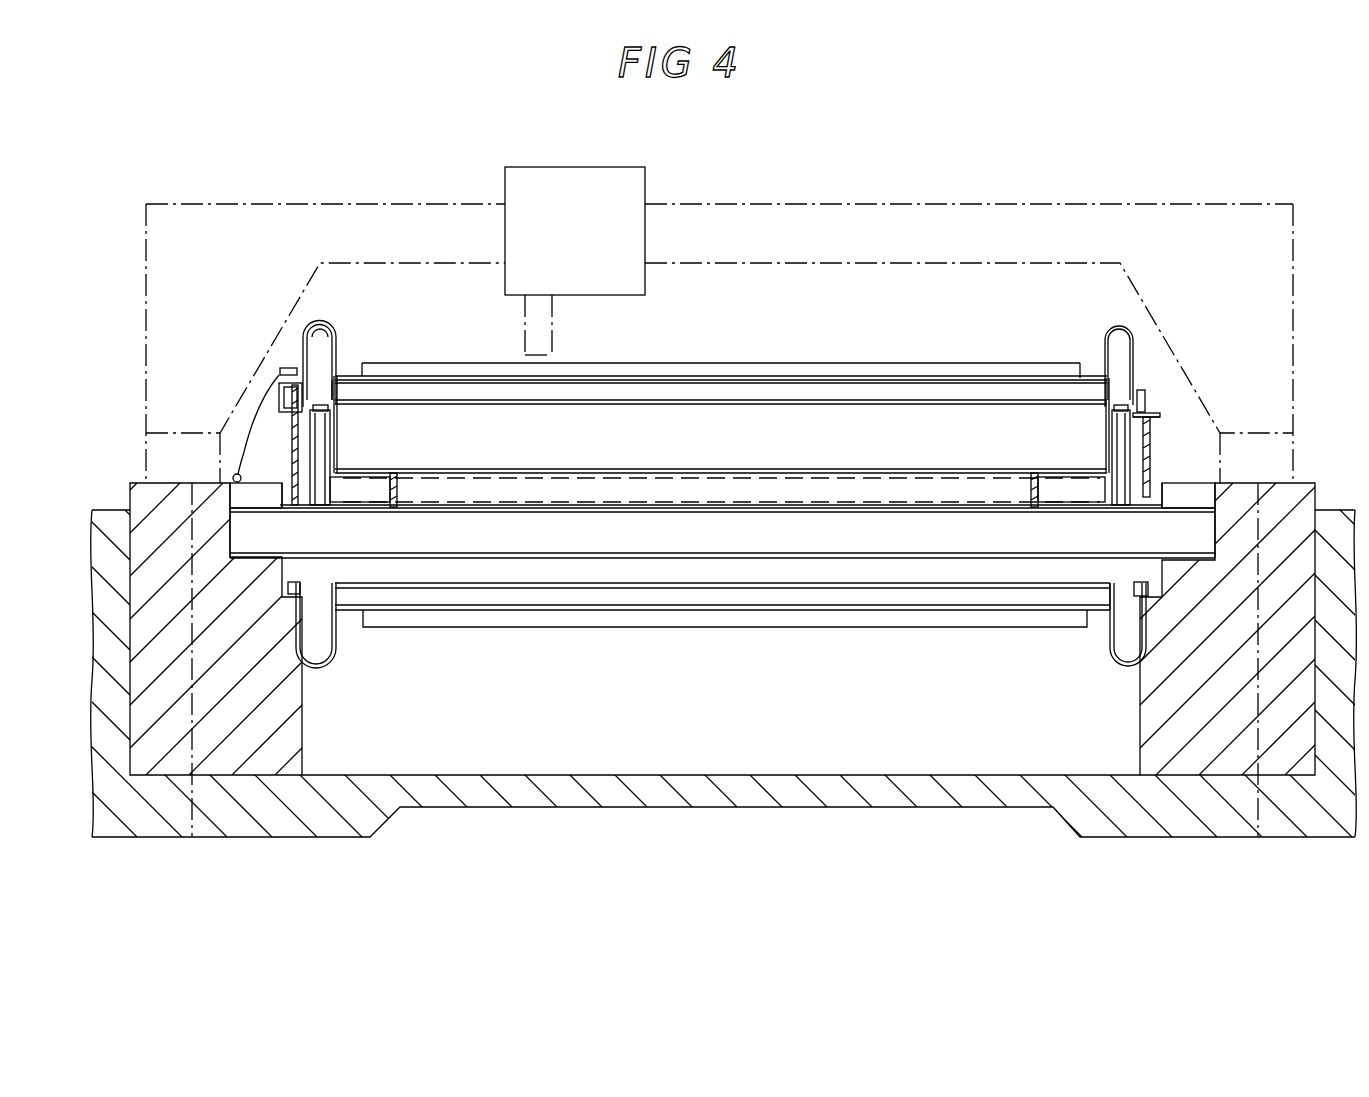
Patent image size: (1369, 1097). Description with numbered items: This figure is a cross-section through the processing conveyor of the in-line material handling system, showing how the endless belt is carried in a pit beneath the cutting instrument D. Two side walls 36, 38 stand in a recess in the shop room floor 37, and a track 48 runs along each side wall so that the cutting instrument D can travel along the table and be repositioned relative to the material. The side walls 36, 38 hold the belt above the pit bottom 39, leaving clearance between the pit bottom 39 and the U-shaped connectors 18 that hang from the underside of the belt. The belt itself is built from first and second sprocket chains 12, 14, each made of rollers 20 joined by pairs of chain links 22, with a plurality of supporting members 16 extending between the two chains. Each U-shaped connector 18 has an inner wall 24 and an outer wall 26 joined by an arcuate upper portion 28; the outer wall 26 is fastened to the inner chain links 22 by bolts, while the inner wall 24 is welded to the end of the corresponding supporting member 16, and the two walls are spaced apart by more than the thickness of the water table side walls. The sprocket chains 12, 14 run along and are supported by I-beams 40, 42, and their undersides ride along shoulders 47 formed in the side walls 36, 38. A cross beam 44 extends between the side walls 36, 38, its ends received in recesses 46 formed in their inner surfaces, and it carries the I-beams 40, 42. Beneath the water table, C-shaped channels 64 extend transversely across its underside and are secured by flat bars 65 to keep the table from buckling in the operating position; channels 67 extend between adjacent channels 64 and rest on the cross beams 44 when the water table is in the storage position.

The cutting instrument D is at (591, 163).
The first sprocket chain 12 is at (1162, 394).
The second sprocket chain 14 is at (318, 386).
The supporting member 16 is at (454, 352).
The U-shaped connector 18 is at (329, 306).
The roller 20 is at (280, 371).
The chain link 22 is at (293, 412).
The inner wall 24 is at (339, 361).
The outer wall 26 is at (304, 333).
The arcuate upper portion 28 is at (338, 334).
The side wall 36 is at (1163, 681).
The shop room floor 37 is at (117, 508).
The side wall 38 is at (283, 738).
The pit bottom 39 is at (724, 770).
The I-beam 40 is at (1150, 440).
The I-beam 42 is at (296, 472).
The cross beam 44 is at (780, 541).
The recess 46 is at (262, 498).
The shoulder 47 is at (313, 645).
The track 48 is at (173, 437).
The C-shaped channel 64 is at (742, 501).
The flat bar 65 is at (336, 490).
The channel 67 is at (399, 492).